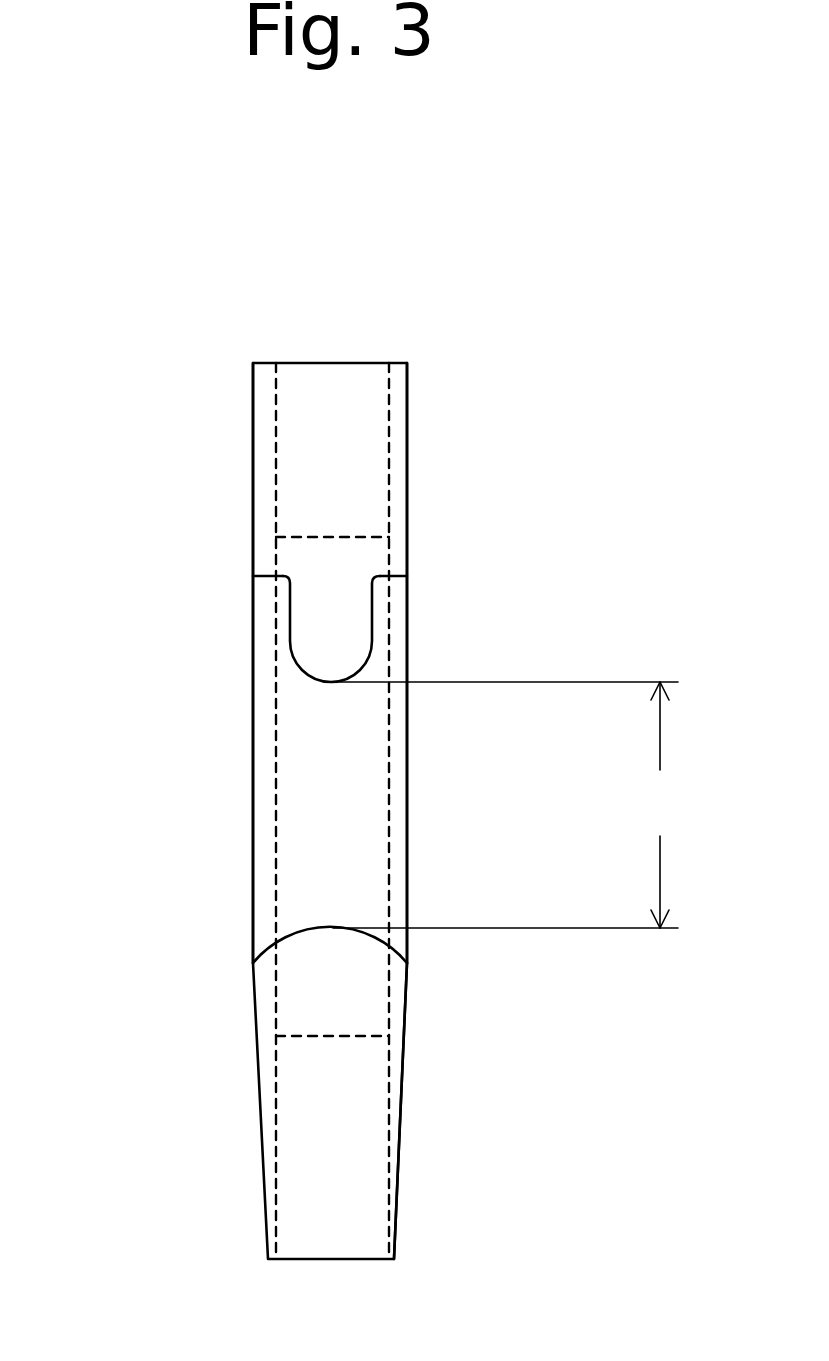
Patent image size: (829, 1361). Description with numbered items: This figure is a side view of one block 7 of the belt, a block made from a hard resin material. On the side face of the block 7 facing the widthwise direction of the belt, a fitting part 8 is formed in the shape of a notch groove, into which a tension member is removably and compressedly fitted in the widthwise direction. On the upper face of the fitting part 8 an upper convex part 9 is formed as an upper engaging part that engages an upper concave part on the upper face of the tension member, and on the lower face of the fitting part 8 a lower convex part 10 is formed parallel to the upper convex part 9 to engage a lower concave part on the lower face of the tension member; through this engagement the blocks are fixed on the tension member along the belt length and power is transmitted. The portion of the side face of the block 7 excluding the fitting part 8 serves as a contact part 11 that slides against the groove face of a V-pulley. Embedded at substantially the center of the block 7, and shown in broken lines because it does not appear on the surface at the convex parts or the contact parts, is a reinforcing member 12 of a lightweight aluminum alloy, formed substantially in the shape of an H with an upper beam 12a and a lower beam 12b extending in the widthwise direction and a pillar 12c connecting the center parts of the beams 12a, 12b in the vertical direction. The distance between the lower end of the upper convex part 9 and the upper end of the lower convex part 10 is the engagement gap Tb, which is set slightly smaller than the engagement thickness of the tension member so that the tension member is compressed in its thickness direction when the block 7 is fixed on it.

The block 7 is at (84, 226).
The fitting part 8 is at (363, 770).
The upper convex part 9 is at (325, 658).
The lower convex part 10 is at (323, 950).
The contact part 11 is at (372, 487).
The reinforcing member 12 is at (389, 410).
The upper beam 12a is at (275, 407).
The lower beam 12b is at (398, 1120).
The pillar 12c is at (395, 840).
The engagement gap Tb is at (508, 805).